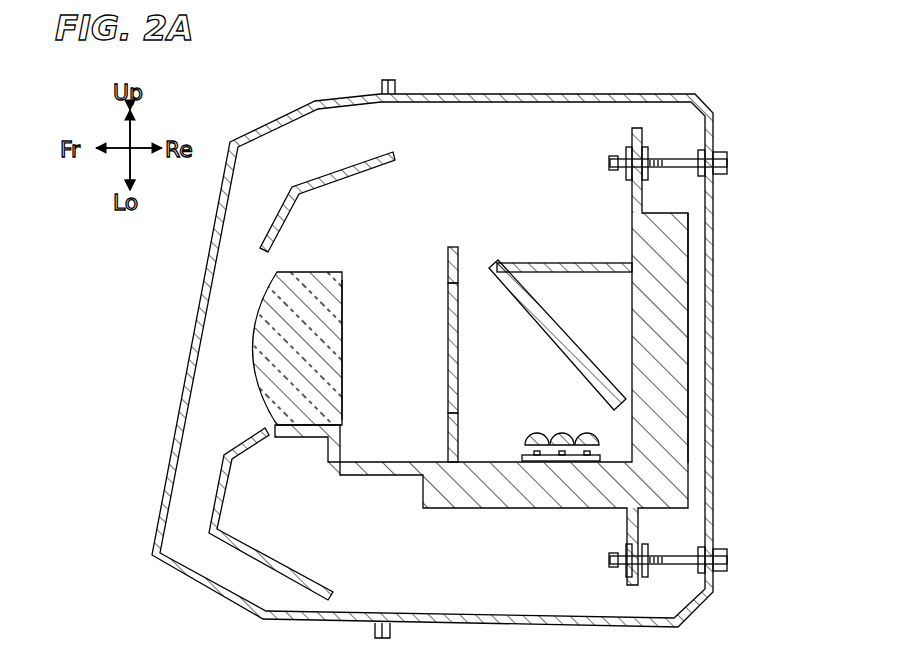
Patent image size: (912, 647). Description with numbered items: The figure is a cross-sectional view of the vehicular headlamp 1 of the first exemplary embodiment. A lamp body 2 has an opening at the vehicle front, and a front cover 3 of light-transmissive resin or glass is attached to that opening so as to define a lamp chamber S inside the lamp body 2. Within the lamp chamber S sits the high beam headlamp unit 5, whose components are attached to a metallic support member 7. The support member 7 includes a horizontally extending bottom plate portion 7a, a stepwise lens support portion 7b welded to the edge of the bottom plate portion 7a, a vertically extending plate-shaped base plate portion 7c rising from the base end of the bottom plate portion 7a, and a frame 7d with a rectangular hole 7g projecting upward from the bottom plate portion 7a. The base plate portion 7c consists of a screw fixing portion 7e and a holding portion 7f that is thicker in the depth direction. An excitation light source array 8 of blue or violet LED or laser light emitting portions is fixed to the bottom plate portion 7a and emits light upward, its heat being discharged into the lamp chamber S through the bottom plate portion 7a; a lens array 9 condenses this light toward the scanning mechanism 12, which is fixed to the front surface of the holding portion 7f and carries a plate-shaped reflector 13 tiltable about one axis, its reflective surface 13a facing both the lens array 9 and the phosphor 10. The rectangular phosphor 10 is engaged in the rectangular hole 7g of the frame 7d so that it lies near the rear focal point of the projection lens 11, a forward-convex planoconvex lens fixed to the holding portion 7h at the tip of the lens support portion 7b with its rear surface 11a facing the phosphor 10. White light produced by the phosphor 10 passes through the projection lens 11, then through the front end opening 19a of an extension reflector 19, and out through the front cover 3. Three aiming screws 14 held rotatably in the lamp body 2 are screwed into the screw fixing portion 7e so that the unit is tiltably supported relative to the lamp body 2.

The vehicular headlamp 1 is at (190, 77).
The lamp body 2 is at (470, 93).
The front cover 3 is at (353, 92).
The high beam headlamp unit 5 is at (548, 148).
The support member 7 is at (692, 496).
The bottom plate portion 7a is at (469, 500).
The lens support portion 7b is at (368, 476).
The base plate portion 7c is at (768, 207).
The frame 7d is at (456, 247).
The screw fixing portion 7e is at (640, 198).
The holding portion 7f is at (680, 246).
The rectangular hole 7g is at (458, 416).
The holding portion 7h is at (304, 438).
The excitation light source array 8 is at (548, 463).
The lens array 9 is at (590, 432).
The phosphor 10 is at (448, 286).
The projection lens 11 is at (301, 271).
The rear surface 11a is at (345, 290).
The scanning mechanism 12 is at (600, 332).
The reflector 13 is at (576, 345).
The reflective surface 13a is at (557, 343).
The aiming screws 14 is at (729, 164).
The extension reflector 19 is at (322, 172).
The front end opening 19a is at (267, 250).
The lamp chamber S is at (467, 147).